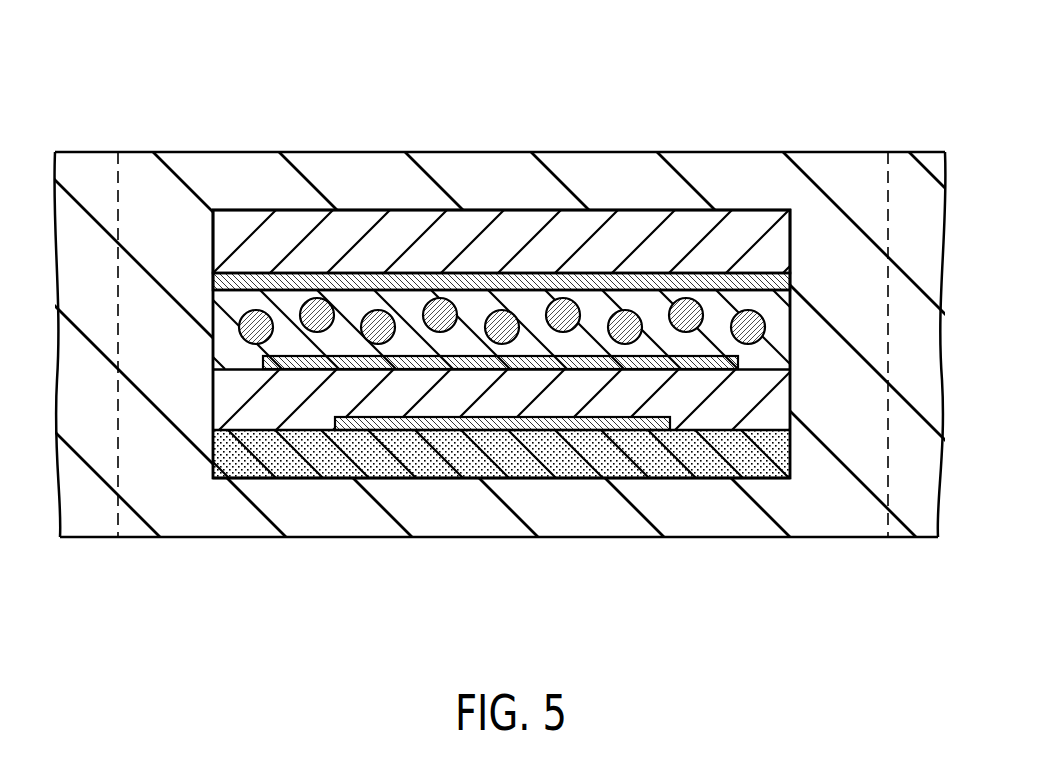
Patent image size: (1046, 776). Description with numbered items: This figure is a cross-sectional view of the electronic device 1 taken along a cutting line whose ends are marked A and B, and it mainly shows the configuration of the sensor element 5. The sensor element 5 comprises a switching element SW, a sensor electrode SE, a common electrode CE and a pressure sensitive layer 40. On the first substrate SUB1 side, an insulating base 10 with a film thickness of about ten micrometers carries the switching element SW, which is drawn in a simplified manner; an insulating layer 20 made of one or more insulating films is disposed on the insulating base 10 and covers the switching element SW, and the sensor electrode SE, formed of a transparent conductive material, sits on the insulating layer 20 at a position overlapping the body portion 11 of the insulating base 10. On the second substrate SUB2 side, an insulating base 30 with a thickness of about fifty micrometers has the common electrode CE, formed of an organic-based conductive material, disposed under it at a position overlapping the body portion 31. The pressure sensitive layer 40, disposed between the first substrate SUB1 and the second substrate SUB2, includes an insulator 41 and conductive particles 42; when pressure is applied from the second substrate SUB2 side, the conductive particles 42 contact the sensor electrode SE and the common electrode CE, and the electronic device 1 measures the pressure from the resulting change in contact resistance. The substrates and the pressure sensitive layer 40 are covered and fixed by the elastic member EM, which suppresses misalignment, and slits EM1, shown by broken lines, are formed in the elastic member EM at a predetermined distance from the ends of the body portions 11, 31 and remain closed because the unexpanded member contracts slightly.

The electronic device 1 is at (523, 318).
The sensor element 5 is at (491, 324).
The elastic member EM is at (523, 337).
The slits EM1 is at (117, 505).
The first substrate SUB1 is at (490, 481).
The second substrate SUB2 is at (489, 186).
The insulating base 30 is at (529, 186).
The body portion 31 is at (503, 230).
The common electrode CE is at (592, 286).
The pressure sensitive layer 40 is at (499, 324).
The insulator 41 is at (648, 310).
The conductive particles 42 is at (688, 298).
The sensor electrode SE is at (528, 363).
The switching element SW is at (628, 422).
The insulating layer 20 is at (710, 412).
The insulating base 10 is at (493, 512).
The body portion 11 is at (754, 463).
The section line end A is at (56, 365).
The section line end B is at (941, 365).